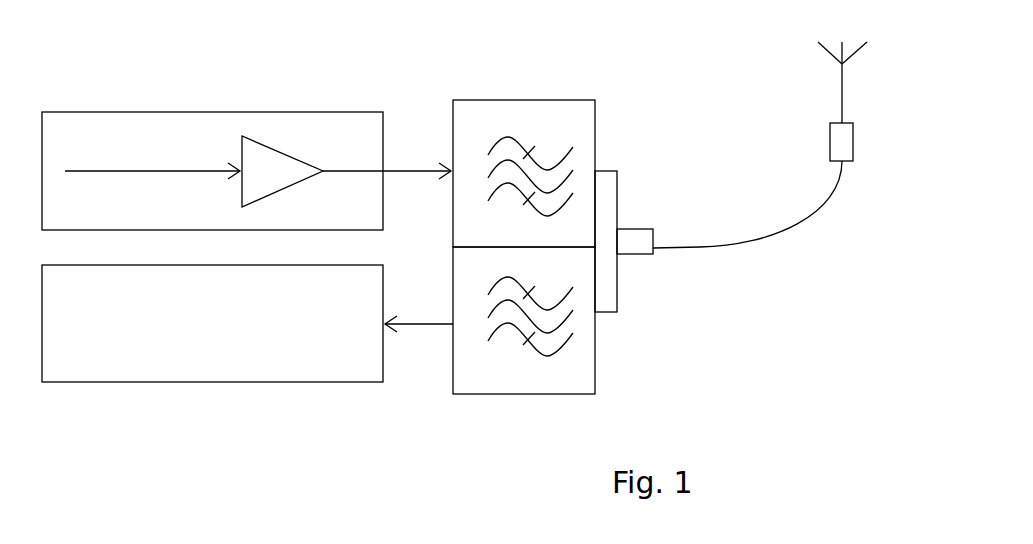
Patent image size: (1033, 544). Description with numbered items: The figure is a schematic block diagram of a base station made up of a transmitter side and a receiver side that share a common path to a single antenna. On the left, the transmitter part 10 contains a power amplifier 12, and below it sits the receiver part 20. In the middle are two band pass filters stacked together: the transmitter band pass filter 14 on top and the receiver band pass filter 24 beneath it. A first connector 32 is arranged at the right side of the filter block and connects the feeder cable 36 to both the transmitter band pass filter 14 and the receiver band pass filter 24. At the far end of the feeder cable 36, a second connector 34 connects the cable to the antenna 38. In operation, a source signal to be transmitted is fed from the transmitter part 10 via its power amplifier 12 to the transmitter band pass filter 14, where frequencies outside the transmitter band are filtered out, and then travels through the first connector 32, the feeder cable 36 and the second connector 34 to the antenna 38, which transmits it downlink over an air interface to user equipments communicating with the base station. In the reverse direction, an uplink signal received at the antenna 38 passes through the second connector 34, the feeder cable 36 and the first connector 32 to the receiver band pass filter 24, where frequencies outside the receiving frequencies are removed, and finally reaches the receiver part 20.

The transmitter part 10 is at (131, 218).
The power amplifier 12 is at (286, 153).
The transmitter band pass filter 14 is at (549, 100).
The receiver part 20 is at (143, 359).
The receiver band pass filter 24 is at (522, 394).
The first connector 32 is at (640, 229).
The second connector 34 is at (830, 152).
The feeder cable 36 is at (782, 232).
The antenna 38 is at (818, 52).